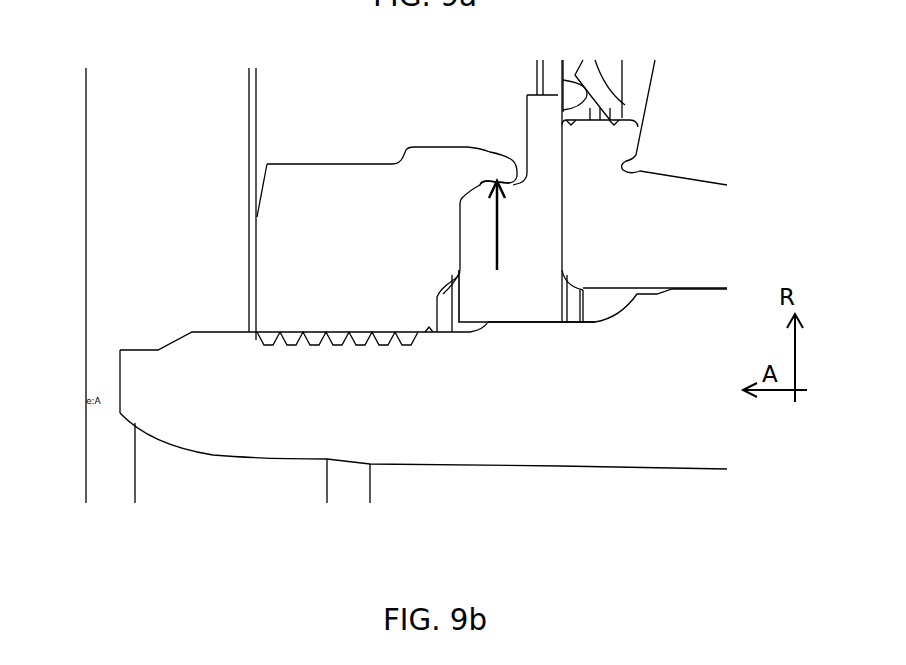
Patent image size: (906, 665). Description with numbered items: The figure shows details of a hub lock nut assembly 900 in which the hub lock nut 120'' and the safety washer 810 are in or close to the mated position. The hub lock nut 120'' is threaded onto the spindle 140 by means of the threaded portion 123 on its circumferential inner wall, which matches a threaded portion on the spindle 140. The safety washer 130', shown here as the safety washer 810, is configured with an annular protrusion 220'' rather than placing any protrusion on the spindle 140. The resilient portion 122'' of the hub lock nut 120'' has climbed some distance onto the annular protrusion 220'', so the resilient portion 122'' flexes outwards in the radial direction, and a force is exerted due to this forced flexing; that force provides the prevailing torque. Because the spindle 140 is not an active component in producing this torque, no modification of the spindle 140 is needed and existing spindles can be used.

The hub lock nut assembly 900 is at (125, 50).
The hub lock nut 120'' is at (383, 204).
The resilient portion 122'' is at (477, 137).
The threaded portion 123 is at (355, 330).
The safety washer 130' is at (527, 191).
The spindle 140 is at (636, 406).
The annular protrusion 220'' is at (578, 152).
The safety washer 810 is at (553, 183).